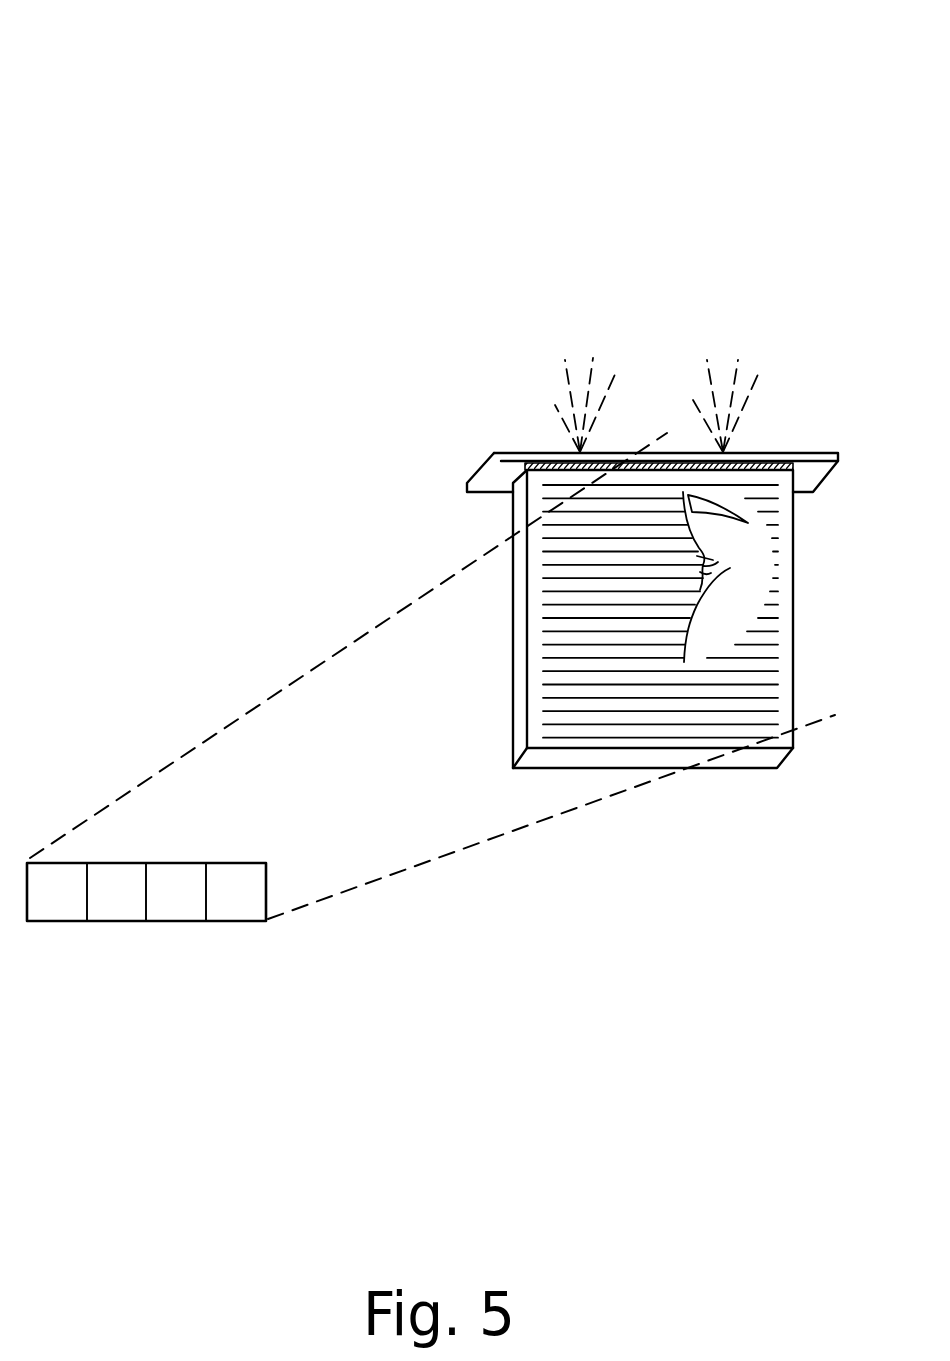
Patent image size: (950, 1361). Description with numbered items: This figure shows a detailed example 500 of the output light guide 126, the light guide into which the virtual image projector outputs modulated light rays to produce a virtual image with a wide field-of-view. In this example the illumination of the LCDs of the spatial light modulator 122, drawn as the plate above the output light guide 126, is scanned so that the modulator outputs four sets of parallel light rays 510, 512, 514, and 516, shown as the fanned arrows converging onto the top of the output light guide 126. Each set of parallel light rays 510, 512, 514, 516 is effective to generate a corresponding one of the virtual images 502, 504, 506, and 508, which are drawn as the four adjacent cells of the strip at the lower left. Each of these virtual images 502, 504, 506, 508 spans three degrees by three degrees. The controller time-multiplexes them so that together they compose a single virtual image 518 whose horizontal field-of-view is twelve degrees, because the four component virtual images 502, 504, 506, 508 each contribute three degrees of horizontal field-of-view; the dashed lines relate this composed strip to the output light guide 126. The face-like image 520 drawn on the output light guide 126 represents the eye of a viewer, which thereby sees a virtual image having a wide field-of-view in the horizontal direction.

The detailed example 500 is at (114, 98).
The spatial light modulator 122 is at (471, 436).
The output light guide 126 is at (730, 794).
The virtual image 502 is at (43, 921).
The virtual image 504 is at (106, 863).
The virtual image 506 is at (163, 921).
The virtual image 508 is at (223, 863).
The set of parallel light rays 510 is at (552, 400).
The set of parallel light rays 512 is at (567, 390).
The set of parallel light rays 514 is at (587, 389).
The set of parallel light rays 516 is at (605, 395).
The virtual image 518 is at (160, 923).
The eye 520 is at (753, 549).